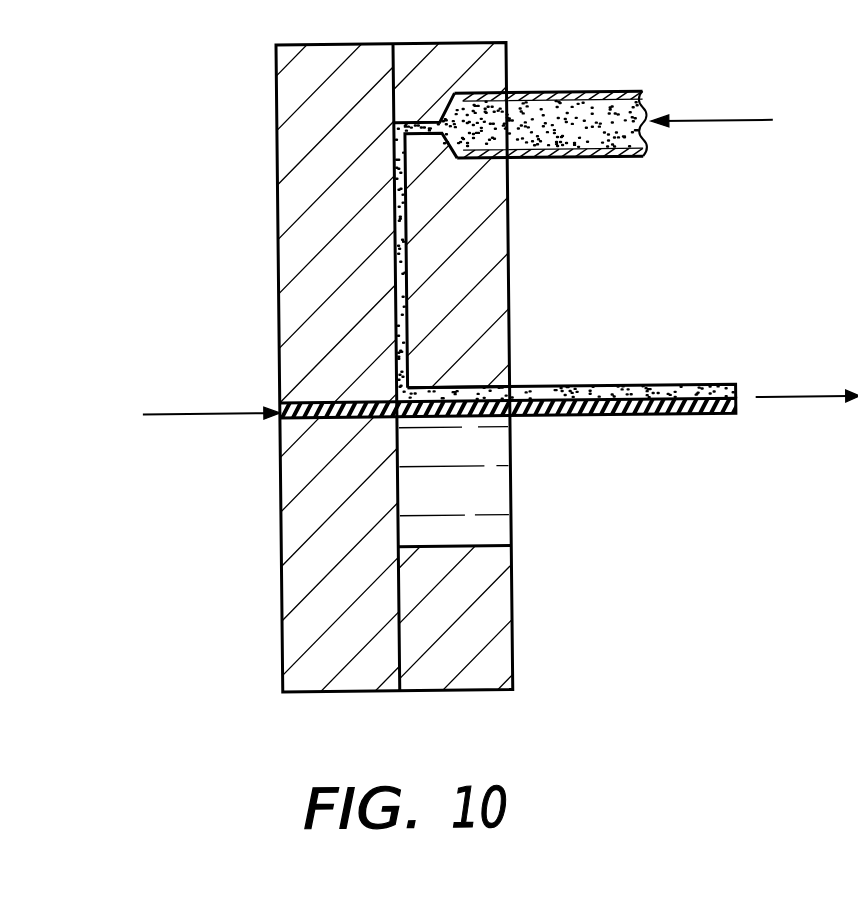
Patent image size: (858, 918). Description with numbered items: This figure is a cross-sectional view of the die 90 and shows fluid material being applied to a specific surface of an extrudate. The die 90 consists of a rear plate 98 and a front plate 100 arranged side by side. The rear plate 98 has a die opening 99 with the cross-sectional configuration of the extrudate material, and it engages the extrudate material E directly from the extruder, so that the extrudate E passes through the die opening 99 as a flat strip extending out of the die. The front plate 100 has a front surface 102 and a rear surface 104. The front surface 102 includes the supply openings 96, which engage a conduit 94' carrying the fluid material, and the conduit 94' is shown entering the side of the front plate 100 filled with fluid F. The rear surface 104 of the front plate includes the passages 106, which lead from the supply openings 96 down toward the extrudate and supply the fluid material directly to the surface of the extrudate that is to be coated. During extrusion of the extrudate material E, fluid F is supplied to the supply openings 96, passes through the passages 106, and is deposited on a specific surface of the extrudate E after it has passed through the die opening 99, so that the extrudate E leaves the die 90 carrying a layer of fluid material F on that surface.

The die 90 is at (429, 394).
The conduit 94' is at (551, 156).
The supply openings 96 is at (509, 118).
The rear plate 98 is at (300, 640).
The die opening 99 is at (283, 420).
The front plate 100 is at (492, 601).
The front surface 102 is at (508, 331).
The rear surface 104 is at (391, 486).
The passages 106 is at (392, 229).
The extrudate material E is at (652, 423).
The fluid material F is at (680, 394).